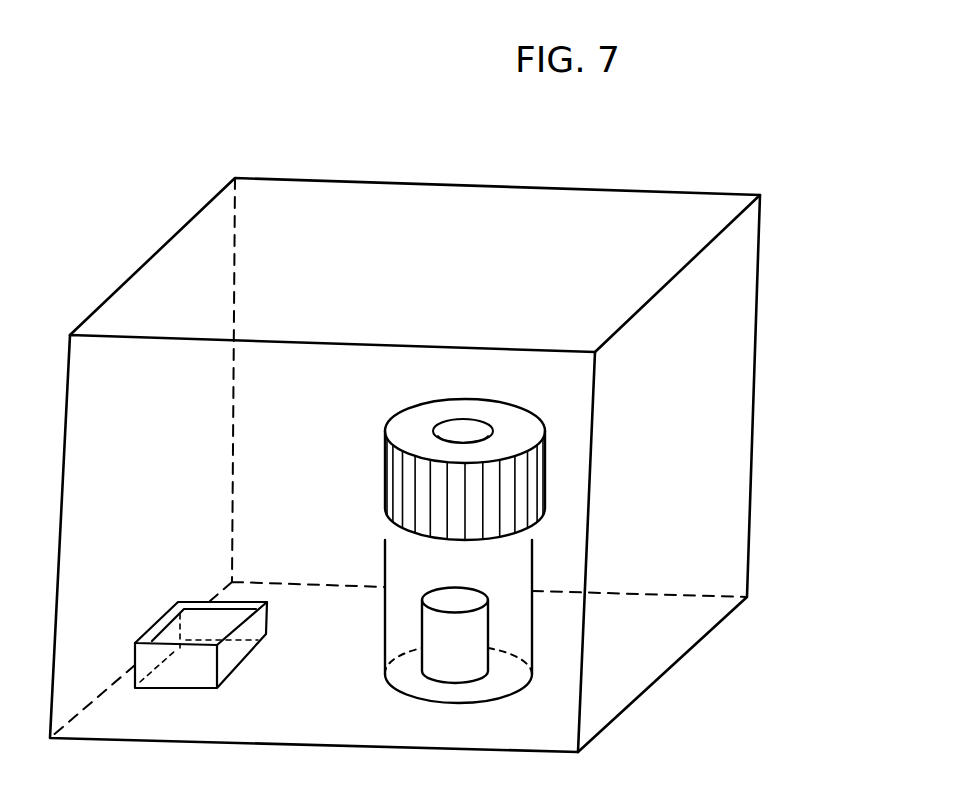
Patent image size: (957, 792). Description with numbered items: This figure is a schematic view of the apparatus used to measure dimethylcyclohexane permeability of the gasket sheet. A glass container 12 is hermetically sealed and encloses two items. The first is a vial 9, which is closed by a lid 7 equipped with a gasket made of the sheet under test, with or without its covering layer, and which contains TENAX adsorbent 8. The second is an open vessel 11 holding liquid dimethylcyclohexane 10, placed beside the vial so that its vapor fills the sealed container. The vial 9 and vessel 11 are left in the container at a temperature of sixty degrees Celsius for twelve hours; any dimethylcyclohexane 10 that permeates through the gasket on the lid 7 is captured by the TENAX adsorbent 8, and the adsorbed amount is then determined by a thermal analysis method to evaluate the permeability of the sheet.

The cap 7 is at (460, 437).
The TENAX adsorbent 8 is at (455, 638).
The vial 9 is at (387, 547).
The dimethylcyclohexane 10 is at (200, 623).
The open vessel 11 is at (230, 660).
The glass container 12 is at (732, 362).